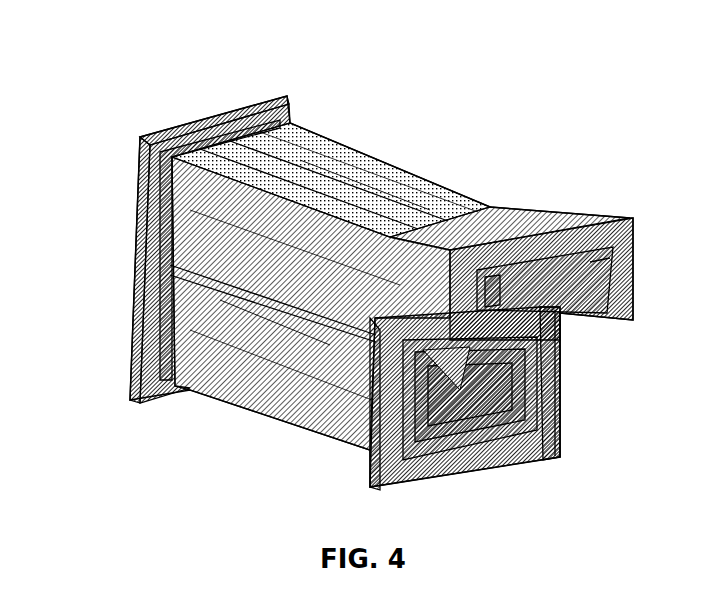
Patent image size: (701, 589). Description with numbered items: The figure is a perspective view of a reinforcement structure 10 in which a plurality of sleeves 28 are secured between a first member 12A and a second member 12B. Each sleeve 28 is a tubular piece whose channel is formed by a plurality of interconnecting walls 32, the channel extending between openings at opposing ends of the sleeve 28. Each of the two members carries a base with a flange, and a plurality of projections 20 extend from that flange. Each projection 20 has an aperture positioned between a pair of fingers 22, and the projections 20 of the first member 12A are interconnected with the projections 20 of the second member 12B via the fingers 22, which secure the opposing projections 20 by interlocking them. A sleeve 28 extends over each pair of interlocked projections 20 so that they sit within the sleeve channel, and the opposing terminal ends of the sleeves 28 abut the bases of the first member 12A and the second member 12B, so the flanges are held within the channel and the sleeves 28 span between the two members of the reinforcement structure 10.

The reinforcement structure 10 is at (486, 91).
The first member 12A is at (156, 224).
The second member 12B is at (520, 318).
The projection 20 is at (288, 162).
The fingers 22 is at (327, 257).
The sleeve 28 is at (458, 174).
The interconnecting walls 32 is at (305, 190).